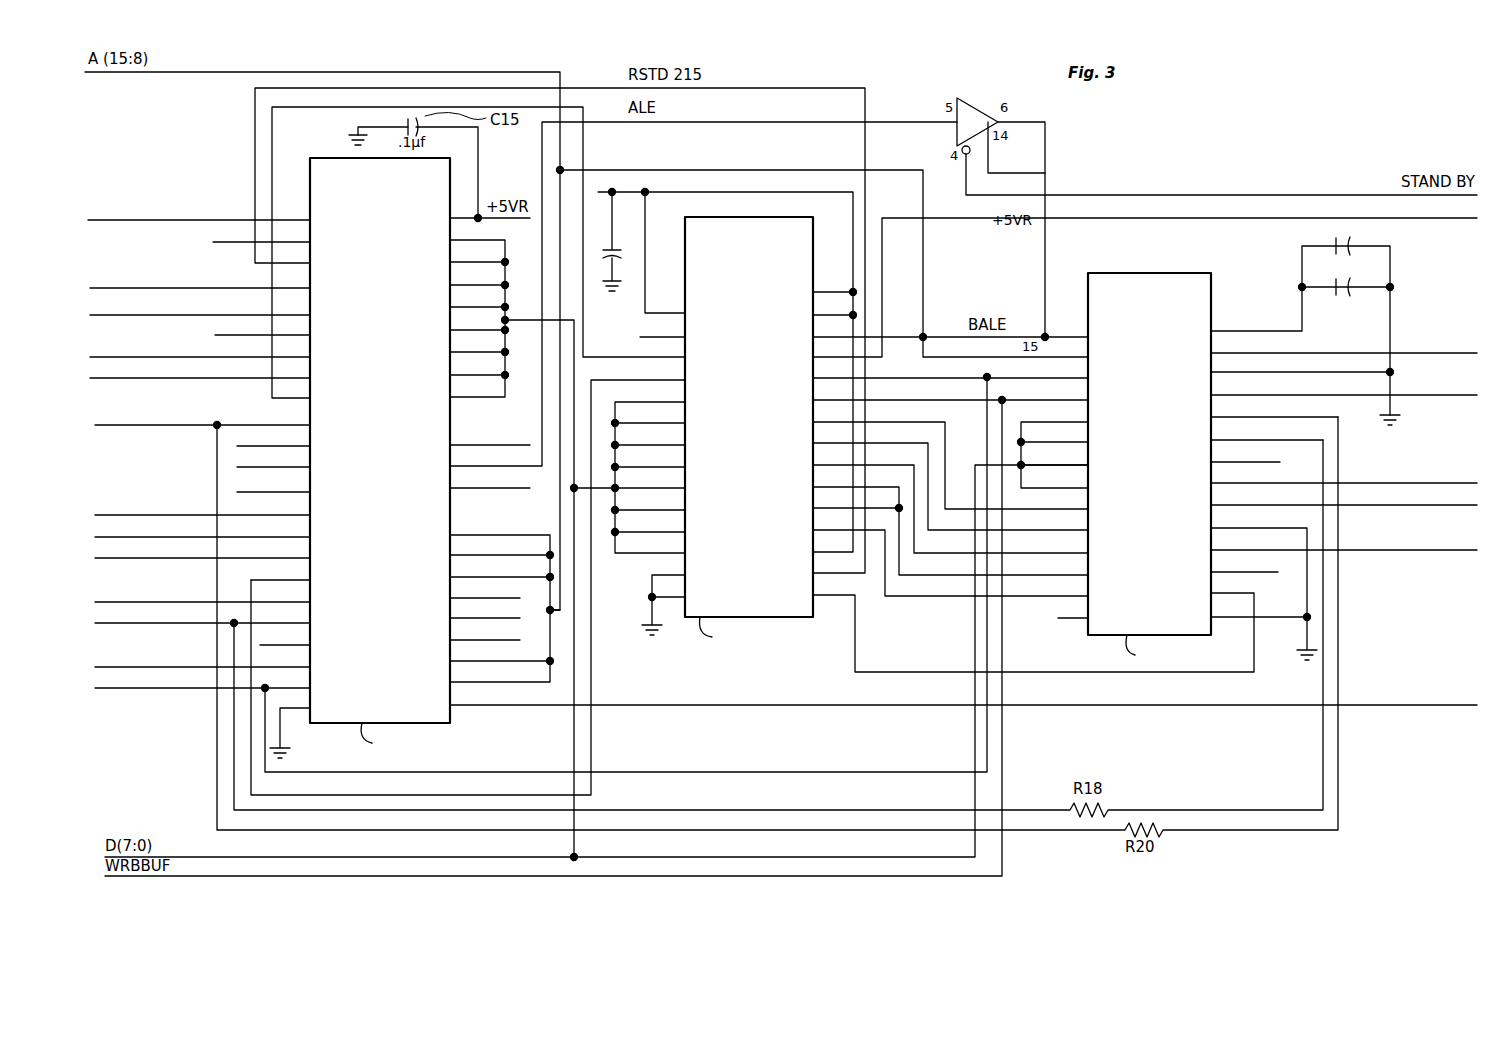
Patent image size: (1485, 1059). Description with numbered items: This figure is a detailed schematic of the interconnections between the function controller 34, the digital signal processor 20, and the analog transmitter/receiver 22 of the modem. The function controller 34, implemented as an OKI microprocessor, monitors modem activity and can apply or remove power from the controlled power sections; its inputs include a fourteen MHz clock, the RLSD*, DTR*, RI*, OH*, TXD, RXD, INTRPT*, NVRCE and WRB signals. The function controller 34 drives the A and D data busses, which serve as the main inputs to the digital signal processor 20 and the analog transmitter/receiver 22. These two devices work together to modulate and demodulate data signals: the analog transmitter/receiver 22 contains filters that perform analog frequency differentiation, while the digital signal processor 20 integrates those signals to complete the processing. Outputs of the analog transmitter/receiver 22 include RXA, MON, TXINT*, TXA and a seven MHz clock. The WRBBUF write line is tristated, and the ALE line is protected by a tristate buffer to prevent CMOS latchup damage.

The function controller 34 is at (446, 723).
The digital signal processor 20 is at (805, 617).
The analog transmitter/receiver 22 is at (1185, 635).